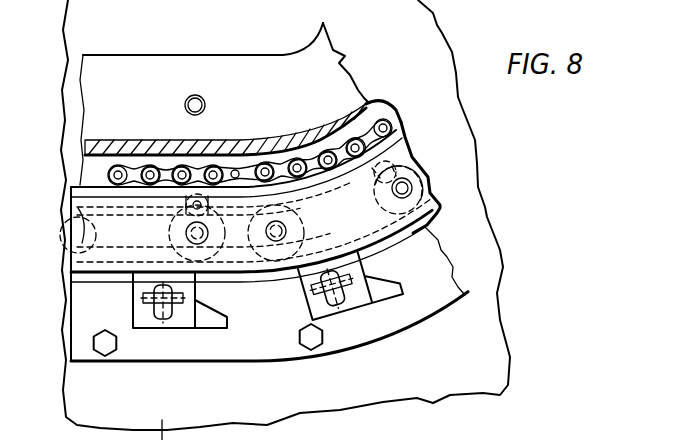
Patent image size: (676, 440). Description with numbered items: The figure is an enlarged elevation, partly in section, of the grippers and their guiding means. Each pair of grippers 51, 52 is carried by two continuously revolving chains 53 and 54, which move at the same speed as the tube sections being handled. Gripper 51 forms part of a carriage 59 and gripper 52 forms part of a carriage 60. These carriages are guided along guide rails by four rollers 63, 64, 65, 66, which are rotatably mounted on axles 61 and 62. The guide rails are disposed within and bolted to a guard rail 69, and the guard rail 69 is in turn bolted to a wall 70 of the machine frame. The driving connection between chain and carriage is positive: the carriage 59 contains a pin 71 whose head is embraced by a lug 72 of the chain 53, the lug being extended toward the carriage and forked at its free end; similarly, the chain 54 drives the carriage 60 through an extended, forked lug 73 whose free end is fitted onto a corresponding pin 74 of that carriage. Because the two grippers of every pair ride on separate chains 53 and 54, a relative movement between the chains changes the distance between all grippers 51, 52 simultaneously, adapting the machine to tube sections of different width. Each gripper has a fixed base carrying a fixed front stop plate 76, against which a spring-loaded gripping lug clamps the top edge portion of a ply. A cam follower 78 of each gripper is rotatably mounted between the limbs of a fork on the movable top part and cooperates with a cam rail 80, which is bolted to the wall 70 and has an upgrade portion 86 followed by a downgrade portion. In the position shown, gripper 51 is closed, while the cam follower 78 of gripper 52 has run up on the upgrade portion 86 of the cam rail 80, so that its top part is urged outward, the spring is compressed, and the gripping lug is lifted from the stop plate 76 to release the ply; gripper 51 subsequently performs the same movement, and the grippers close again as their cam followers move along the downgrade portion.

The gripper 51 is at (131, 307).
The gripper 52 is at (302, 289).
The chain 53 is at (166, 170).
The chain 54 is at (279, 166).
The carriage 59 is at (97, 220).
The carriage 60 is at (323, 207).
The axle 61 is at (291, 231).
The axle 62 is at (212, 229).
The roller 63 is at (82, 249).
The roller 64 is at (81, 225).
The roller 65 is at (211, 277).
The roller 66 is at (255, 197).
The guard rail 69 is at (341, 60).
The wall 70 is at (436, 36).
The pin 71 is at (166, 230).
The lug 72 is at (198, 216).
The lug 73 is at (373, 141).
The pin 74 is at (353, 181).
The stop plate 76 is at (147, 327).
The cam follower 78 is at (140, 296).
The cam rail 80 is at (231, 349).
The upgrade portion 86 is at (430, 250).